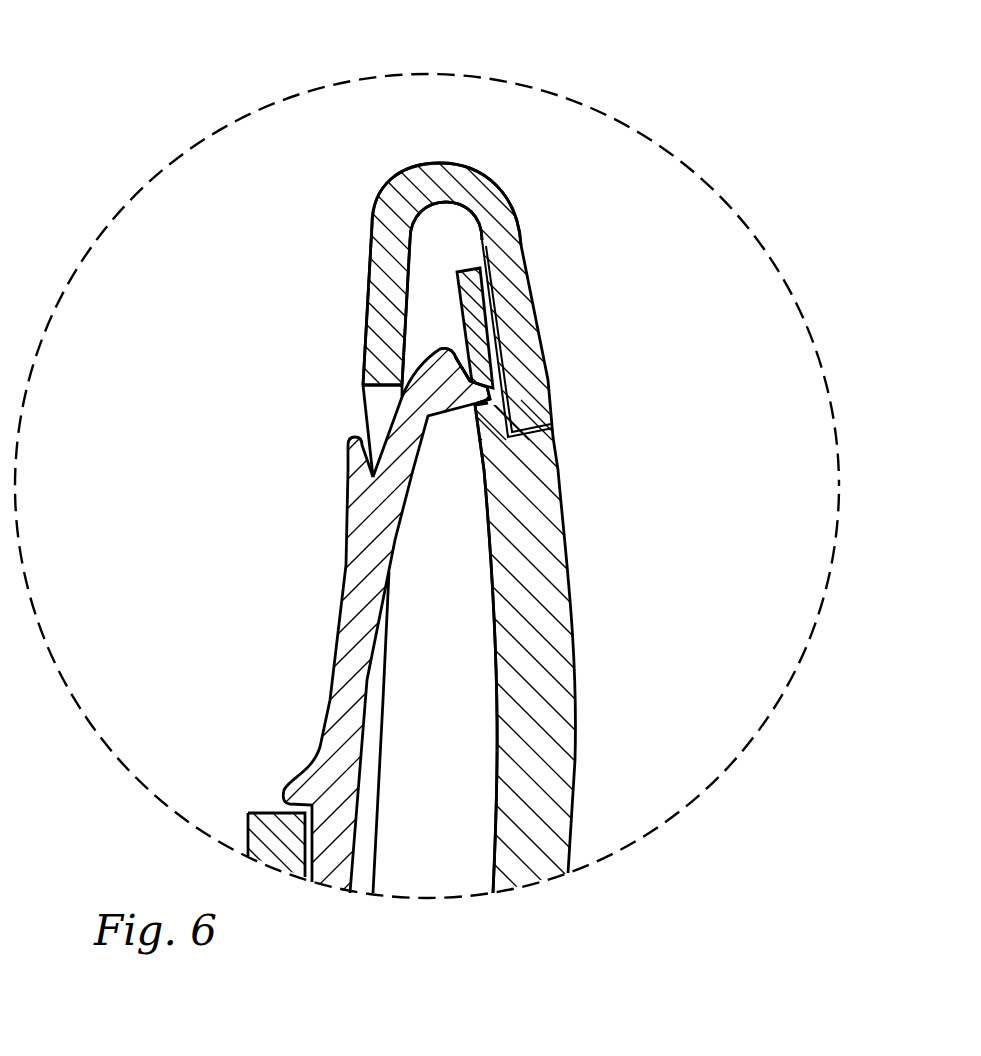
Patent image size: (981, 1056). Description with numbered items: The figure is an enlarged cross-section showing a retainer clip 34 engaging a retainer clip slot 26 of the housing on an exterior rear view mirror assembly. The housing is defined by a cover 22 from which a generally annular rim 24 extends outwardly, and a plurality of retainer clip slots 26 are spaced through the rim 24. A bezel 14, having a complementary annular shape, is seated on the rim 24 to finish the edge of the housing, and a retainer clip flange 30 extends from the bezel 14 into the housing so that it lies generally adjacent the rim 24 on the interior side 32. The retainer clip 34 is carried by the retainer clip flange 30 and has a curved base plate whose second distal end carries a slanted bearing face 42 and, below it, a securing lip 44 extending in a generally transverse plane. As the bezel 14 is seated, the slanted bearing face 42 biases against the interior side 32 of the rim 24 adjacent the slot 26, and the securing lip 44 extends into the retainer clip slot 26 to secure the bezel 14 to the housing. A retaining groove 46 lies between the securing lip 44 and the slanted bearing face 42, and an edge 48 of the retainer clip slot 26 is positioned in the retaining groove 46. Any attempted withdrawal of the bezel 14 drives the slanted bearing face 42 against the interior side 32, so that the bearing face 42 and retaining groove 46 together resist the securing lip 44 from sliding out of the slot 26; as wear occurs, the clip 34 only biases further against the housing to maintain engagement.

The bezel 14 is at (430, 160).
The cover 22 is at (568, 692).
The rim 24 is at (477, 307).
The retainer clip slot 26 is at (495, 404).
The retainer clip flange 30 is at (378, 335).
The interior side 32 is at (500, 722).
The retainer clip 34 is at (326, 688).
The slanted bearing face 42 is at (467, 360).
The securing lip 44 is at (468, 399).
The retaining groove 46 is at (470, 384).
The edge 48 is at (475, 383).